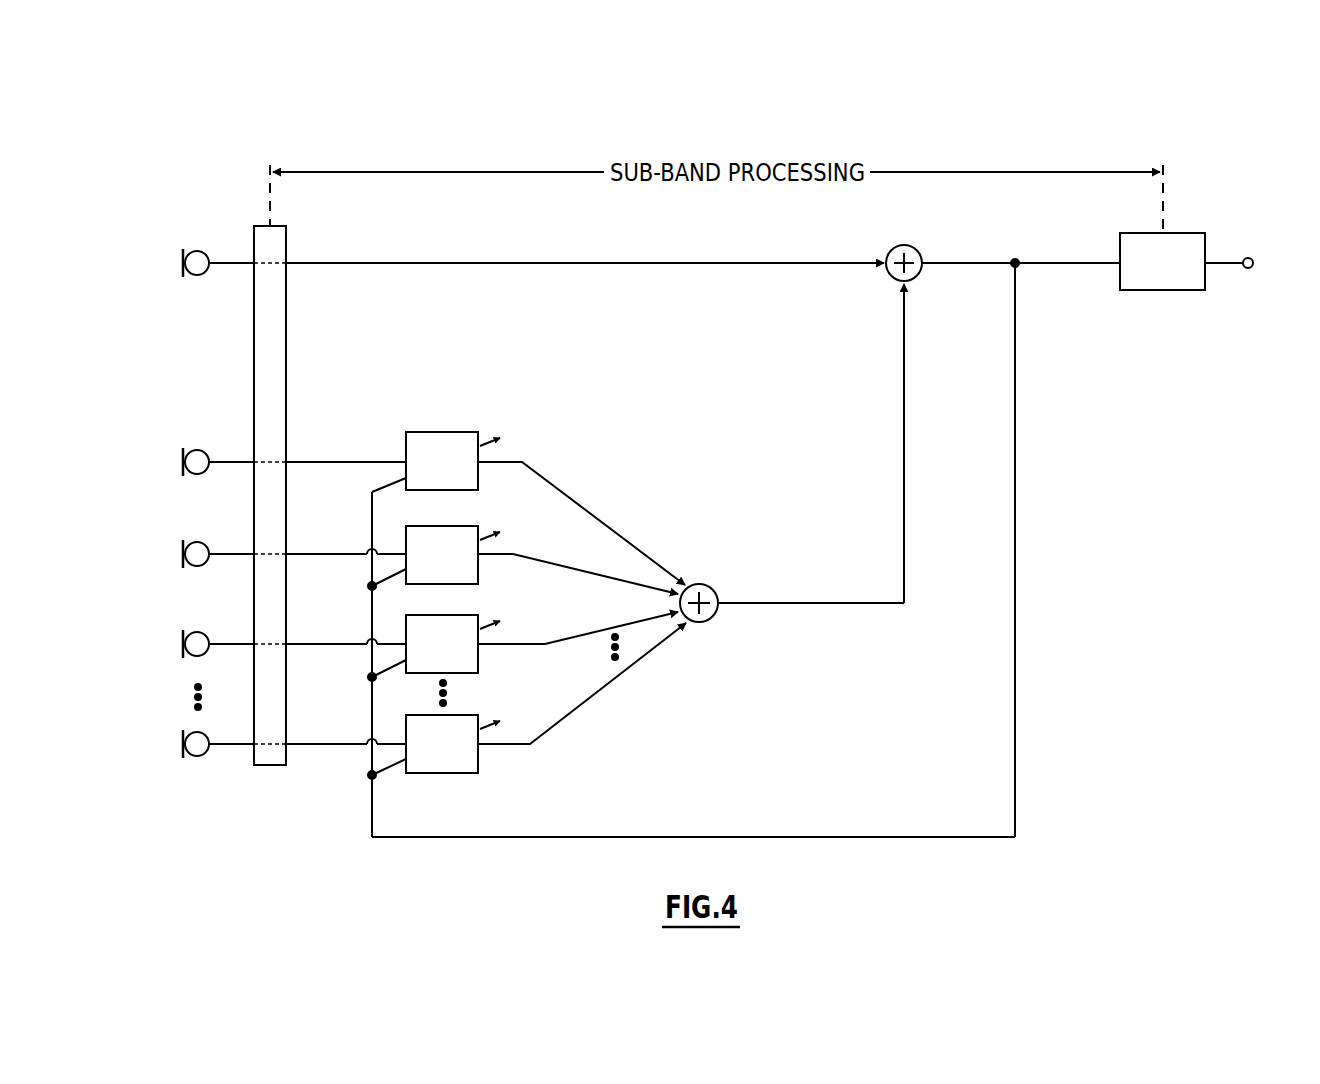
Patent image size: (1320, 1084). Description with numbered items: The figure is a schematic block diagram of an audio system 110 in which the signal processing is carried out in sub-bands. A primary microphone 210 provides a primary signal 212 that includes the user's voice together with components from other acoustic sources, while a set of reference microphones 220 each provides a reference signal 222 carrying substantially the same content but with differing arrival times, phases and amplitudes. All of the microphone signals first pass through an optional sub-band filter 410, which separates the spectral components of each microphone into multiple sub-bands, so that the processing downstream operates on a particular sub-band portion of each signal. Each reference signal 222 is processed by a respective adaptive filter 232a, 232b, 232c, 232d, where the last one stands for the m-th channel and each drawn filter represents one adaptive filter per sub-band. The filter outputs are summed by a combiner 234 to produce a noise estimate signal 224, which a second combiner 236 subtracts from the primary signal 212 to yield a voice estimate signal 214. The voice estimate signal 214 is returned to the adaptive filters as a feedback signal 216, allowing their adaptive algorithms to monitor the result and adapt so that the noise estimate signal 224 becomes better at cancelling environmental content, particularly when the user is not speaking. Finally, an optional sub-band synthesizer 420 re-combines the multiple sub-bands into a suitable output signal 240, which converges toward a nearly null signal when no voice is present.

The audio system 110 is at (1204, 127).
The primary microphone 210 is at (182, 262).
The primary signal 212 is at (659, 263).
The voice estimate signal 214 is at (1050, 265).
The feedback signal 216 is at (793, 837).
The reference microphones 220 is at (178, 475).
The reference signal 222 is at (305, 462).
The noise estimate signal 224 is at (785, 605).
The adaptive filter 232a is at (452, 432).
The adaptive filter 232b is at (478, 570).
The adaptive filter 232c is at (478, 659).
The adaptive filter 232d is at (478, 758).
The combiner 234 is at (714, 589).
The combiner 236 is at (917, 251).
The output signal 240 is at (1250, 269).
The sub-band filter 410 is at (287, 240).
The sub-band synthesizer 420 is at (1194, 233).